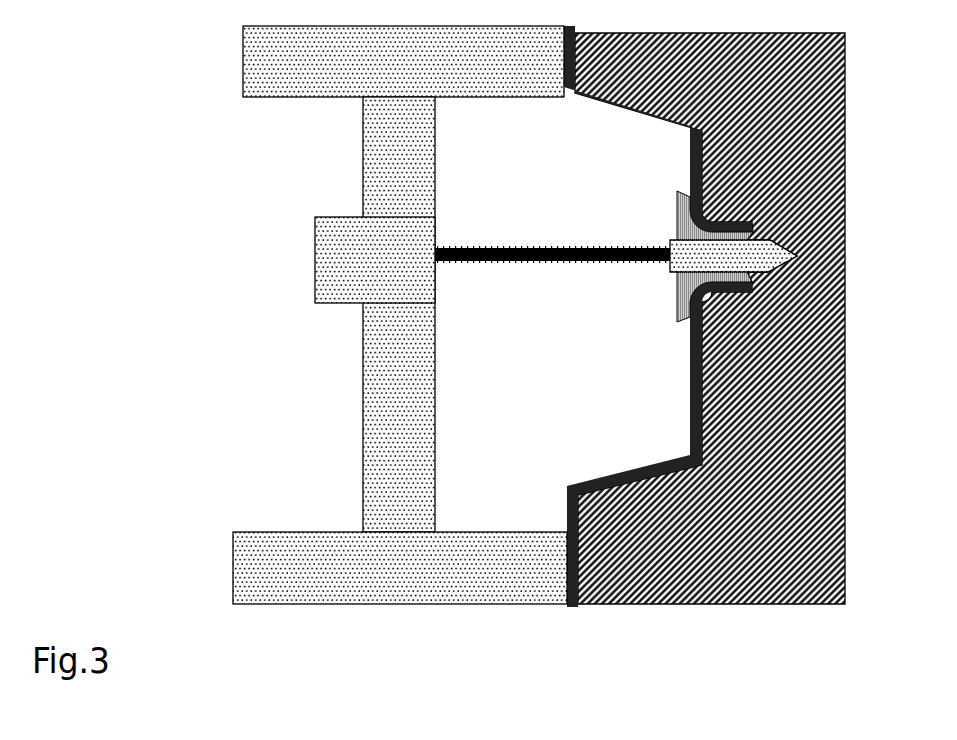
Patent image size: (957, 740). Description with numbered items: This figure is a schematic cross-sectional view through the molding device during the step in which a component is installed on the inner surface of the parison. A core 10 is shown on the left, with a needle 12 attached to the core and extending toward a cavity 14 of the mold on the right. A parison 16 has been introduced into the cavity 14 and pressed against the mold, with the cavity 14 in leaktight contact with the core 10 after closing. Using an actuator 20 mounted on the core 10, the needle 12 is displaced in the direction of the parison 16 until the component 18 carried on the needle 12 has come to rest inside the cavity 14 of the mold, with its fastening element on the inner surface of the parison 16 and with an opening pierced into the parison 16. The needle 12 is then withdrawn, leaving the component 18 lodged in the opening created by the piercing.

The core 10 is at (387, 392).
The needle 12 is at (692, 257).
The cavity 14 is at (820, 458).
The parison 16 is at (628, 477).
The component 18 is at (687, 222).
The actuator 20 is at (355, 252).